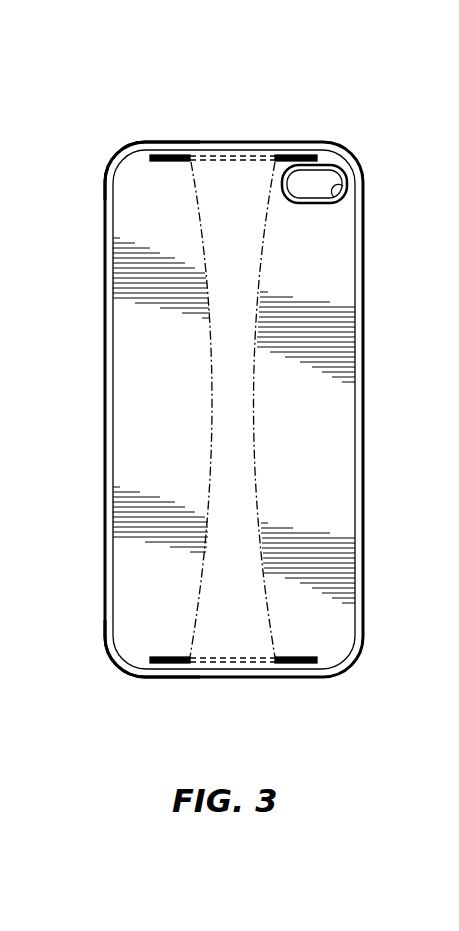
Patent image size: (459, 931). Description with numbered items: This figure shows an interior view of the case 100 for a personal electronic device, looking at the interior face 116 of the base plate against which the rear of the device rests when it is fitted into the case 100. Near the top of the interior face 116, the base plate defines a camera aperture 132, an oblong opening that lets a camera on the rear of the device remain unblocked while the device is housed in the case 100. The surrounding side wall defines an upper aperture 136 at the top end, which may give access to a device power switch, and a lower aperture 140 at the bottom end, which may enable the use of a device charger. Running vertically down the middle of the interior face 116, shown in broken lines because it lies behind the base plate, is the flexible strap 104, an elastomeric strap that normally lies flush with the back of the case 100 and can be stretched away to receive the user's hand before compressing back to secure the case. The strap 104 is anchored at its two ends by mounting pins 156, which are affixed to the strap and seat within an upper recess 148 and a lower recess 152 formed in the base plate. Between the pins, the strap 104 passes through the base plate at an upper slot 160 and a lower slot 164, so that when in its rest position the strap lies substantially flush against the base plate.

The case 100 is at (78, 148).
The flexible strap 104 is at (237, 400).
The interior face 116 is at (172, 433).
The camera aperture 132 is at (338, 193).
The upper aperture 136 is at (165, 148).
The lower aperture 140 is at (158, 678).
The upper recess 148 is at (295, 156).
The lower recess 152 is at (293, 658).
The mounting pins 156 is at (178, 157).
The upper slot 160 is at (235, 157).
The lower slot 164 is at (262, 665).